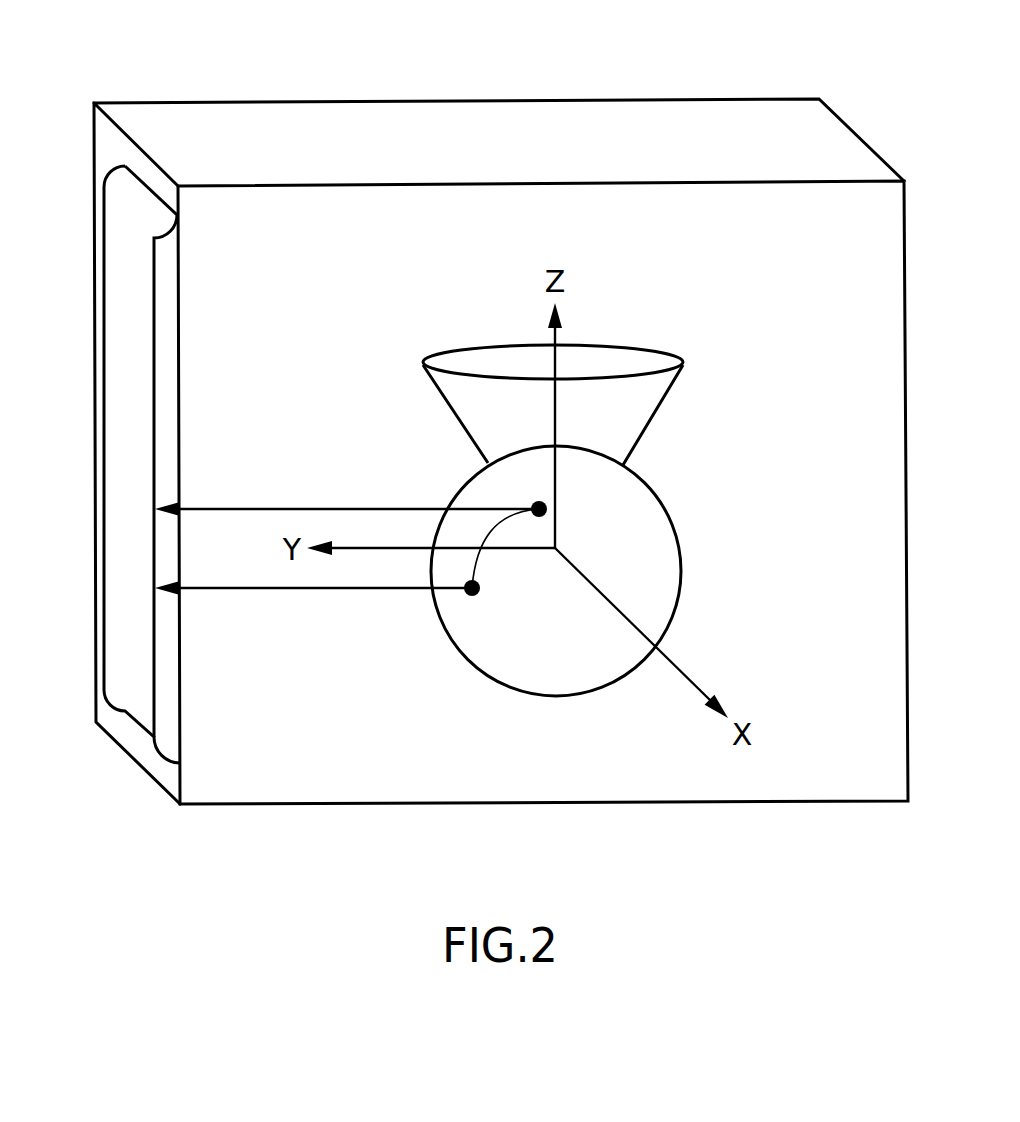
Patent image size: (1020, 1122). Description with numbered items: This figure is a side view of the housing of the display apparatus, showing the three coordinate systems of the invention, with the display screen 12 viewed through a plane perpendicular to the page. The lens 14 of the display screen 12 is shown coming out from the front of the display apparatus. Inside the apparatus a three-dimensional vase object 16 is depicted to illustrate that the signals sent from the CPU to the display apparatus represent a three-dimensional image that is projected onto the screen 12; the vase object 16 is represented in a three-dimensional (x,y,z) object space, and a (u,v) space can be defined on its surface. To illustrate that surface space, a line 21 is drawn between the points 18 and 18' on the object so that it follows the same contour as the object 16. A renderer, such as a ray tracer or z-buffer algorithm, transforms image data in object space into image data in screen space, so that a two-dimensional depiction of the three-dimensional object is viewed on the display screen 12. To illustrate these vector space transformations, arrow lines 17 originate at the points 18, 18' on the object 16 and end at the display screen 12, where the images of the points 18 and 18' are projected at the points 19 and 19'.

The display screen 12 is at (488, 118).
The lens 14 is at (153, 348).
The vase object 16 is at (682, 558).
The arrow lines 17 is at (250, 510).
The point 18 is at (470, 488).
The point 18' is at (426, 618).
The point 19 is at (198, 478).
The point 19' is at (201, 612).
The line 21 is at (488, 537).